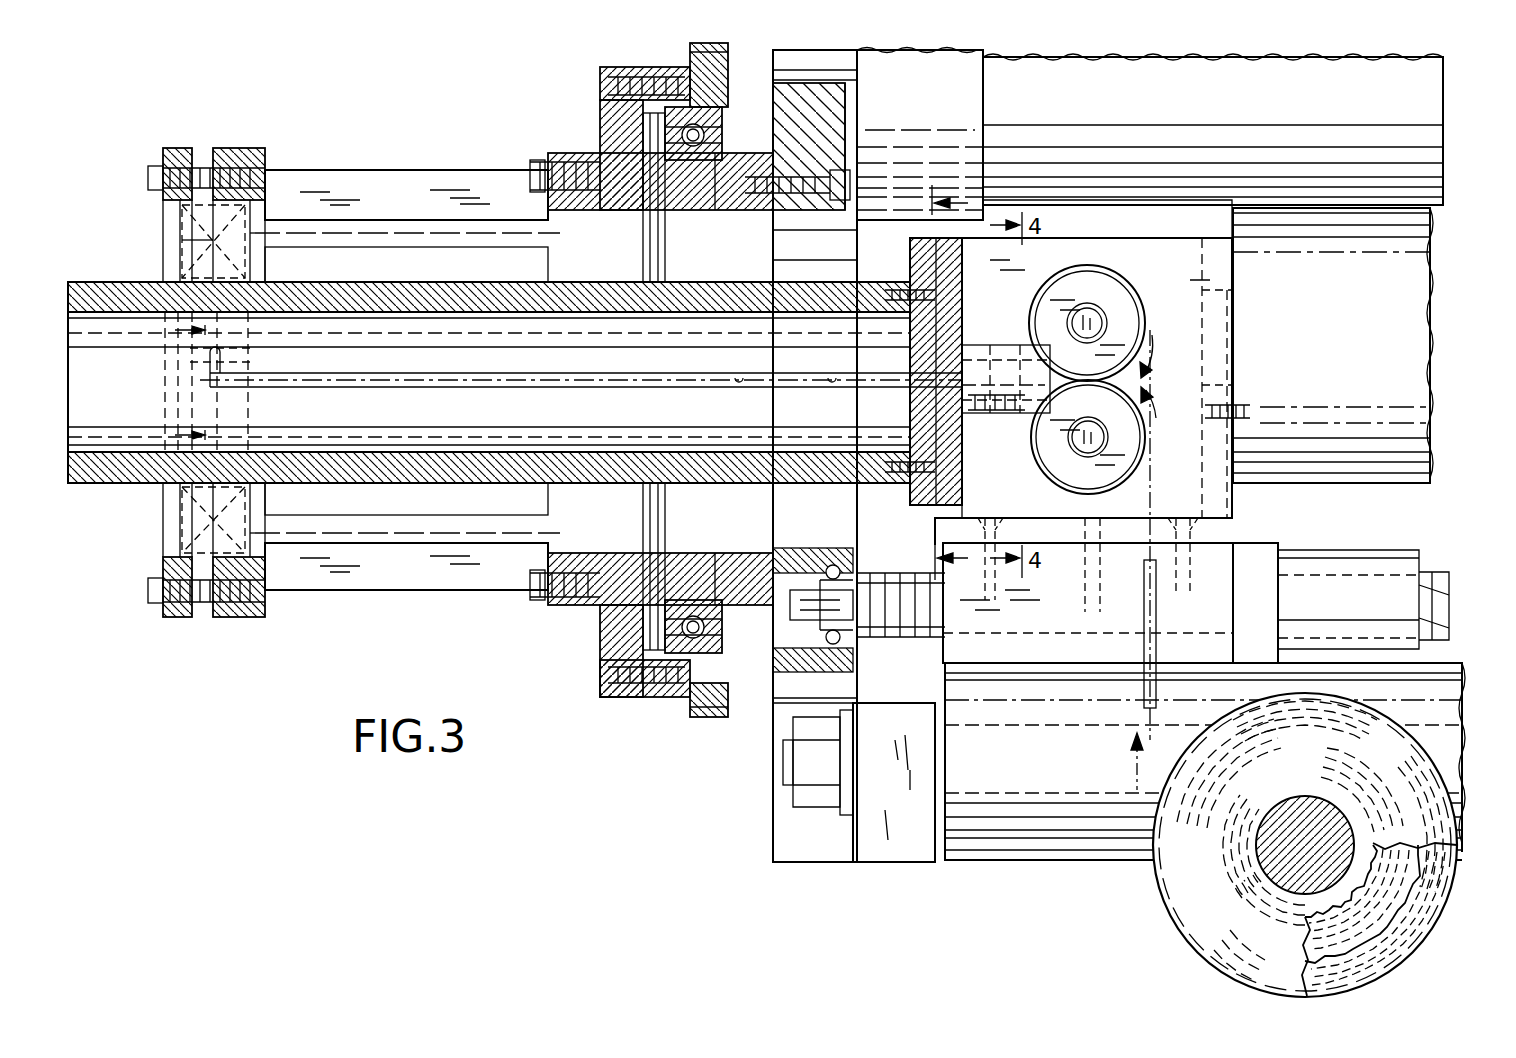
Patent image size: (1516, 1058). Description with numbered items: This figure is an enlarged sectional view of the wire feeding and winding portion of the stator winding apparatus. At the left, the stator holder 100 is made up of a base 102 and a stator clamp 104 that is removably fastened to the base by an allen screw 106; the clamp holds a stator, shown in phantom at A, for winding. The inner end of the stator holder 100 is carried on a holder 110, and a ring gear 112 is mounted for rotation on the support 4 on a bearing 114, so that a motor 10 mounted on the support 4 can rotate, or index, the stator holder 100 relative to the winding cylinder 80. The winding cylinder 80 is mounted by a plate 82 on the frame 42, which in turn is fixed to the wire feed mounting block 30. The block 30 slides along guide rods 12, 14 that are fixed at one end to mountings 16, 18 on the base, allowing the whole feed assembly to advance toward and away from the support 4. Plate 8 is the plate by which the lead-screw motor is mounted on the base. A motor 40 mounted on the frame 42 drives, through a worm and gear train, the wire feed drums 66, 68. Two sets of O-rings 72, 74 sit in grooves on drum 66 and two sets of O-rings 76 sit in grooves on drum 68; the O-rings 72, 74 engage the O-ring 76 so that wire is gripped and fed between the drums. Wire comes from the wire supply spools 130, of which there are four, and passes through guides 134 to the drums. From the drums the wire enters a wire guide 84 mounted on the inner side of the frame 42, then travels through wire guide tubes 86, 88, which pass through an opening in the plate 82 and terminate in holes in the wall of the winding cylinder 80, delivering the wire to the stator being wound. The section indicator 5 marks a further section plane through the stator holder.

The motor 10 is at (1202, 108).
The wire feed mounting block 30 is at (1068, 766).
The motor 40 is at (1352, 332).
The frame 42 is at (1233, 513).
The wire feed drum 66 is at (1050, 452).
The wire feed drum 68 is at (1115, 298).
The "O" ring 72 is at (1130, 478).
The "O" ring 74 is at (1050, 478).
The "O" ring 76 is at (1135, 310).
The winding cylinder 80 is at (390, 485).
The plate 82 is at (915, 262).
The wire guide 84 is at (990, 357).
The wire guide tube 86 is at (698, 376).
The wire guide tube 88 is at (798, 376).
The stator holder 100 is at (468, 165).
The base 102 is at (360, 180).
The stator clamp 104 is at (178, 148).
The allen screw 106 is at (148, 178).
The holder 110 is at (615, 118).
The ring gear 112 is at (705, 712).
The bearing 114 is at (668, 615).
The wire supply spool 130 is at (1418, 920).
The guide 134 is at (1156, 617).
The support 4 is at (780, 718).
The guide rod 12 is at (783, 762).
The guide rod 14 is at (783, 795).
The mounting 16 is at (878, 855).
The mounting 18 is at (915, 845).
The stator A is at (182, 243).
The section line 5 is at (198, 383).
The plate 8 is at (936, 382).